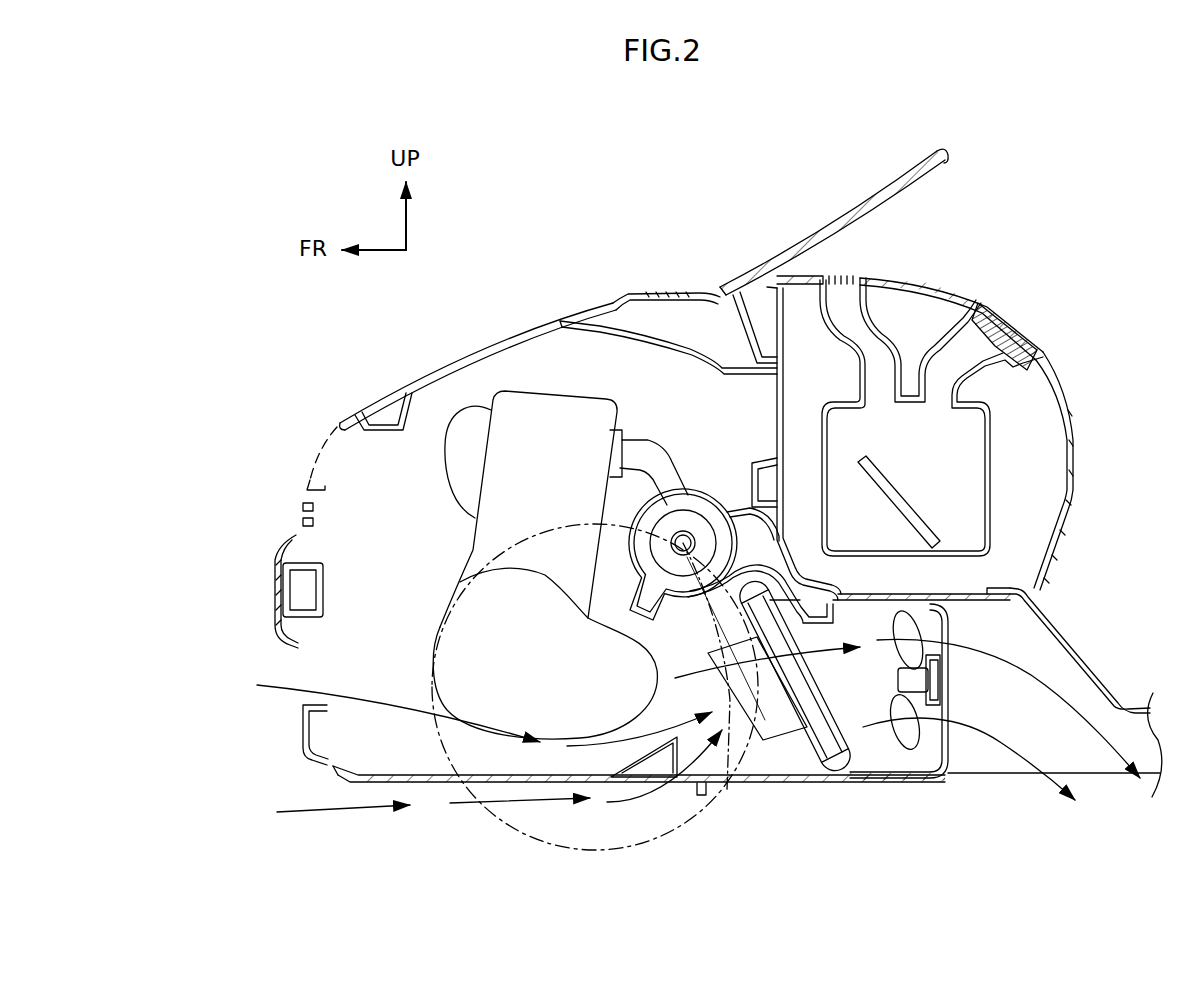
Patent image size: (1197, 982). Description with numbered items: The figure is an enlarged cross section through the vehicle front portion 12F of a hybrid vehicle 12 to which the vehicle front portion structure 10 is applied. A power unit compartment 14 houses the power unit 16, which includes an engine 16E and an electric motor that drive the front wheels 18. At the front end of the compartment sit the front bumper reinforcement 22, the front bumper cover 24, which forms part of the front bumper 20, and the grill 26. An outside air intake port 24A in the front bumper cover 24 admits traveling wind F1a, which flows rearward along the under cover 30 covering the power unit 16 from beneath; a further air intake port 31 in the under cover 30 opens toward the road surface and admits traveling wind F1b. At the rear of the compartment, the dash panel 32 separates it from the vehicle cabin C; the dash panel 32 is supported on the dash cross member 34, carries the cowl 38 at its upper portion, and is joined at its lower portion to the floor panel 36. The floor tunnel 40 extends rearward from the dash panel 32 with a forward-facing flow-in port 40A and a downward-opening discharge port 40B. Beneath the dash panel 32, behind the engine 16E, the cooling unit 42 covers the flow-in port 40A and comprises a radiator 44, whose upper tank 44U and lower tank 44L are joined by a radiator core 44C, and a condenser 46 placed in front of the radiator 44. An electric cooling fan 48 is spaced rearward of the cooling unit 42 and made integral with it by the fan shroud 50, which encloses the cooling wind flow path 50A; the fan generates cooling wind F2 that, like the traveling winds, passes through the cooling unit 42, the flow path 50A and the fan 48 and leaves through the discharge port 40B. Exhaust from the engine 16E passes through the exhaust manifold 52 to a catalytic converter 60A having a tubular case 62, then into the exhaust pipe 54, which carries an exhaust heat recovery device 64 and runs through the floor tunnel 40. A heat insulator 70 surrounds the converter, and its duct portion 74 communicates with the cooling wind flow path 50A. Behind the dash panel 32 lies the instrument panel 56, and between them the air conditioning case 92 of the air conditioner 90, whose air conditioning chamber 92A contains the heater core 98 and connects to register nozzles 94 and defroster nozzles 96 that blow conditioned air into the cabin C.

The vehicle front portion structure 10 is at (704, 185).
The vehicle 12 is at (822, 152).
The vehicle front portion 12F is at (490, 206).
The power unit compartment 14 is at (366, 483).
The power unit 16 is at (531, 543).
The engine 16E is at (566, 390).
The front wheels 18 is at (624, 708).
The front bumper 20 is at (264, 607).
The front bumper reinforcement 22 is at (325, 585).
The front bumper cover 24 is at (268, 598).
The outside air intake port 24A is at (297, 647).
The grill 26 is at (300, 512).
The under cover 30 is at (550, 788).
The air intake port 31 is at (638, 784).
The dash panel 32 is at (773, 400).
The dash cross member 34 is at (762, 462).
The floor panel 36 is at (1010, 585).
The cowl 38 is at (740, 330).
The floor tunnel 40 is at (997, 677).
The flow-in port 40A is at (880, 598).
The discharge port 40B is at (1088, 773).
The cooling unit 42 is at (874, 737).
The radiator 44 is at (859, 723).
The upper tank 44U is at (730, 593).
The radiator core 44C is at (903, 705).
The lower tank 44L is at (866, 790).
The condenser 46 is at (782, 765).
The cooling fan 48 is at (950, 682).
The fan shroud 50 is at (950, 752).
The cooling wind flow path 50A is at (840, 687).
The exhaust manifold 52 is at (638, 442).
The exhaust pipe 54 is at (752, 760).
The instrument panel 56 is at (1072, 415).
The catalytic converter 60A is at (685, 602).
The tubular case 62 is at (696, 503).
The exhaust heat recovery device 64 is at (690, 790).
The heat insulator 70 is at (630, 567).
The duct portion 74 is at (841, 588).
The air conditioner 90 is at (924, 417).
The air conditioning case 92 is at (919, 417).
The air conditioning chamber 92A is at (917, 455).
The register nozzles 94 is at (945, 352).
The defroster nozzles 96 is at (840, 342).
The heater core 98 is at (912, 500).
The vehicle cabin C is at (1146, 332).
The traveling wind F1a is at (367, 700).
The traveling wind F1b is at (340, 808).
The cooling wind F2 is at (714, 678).